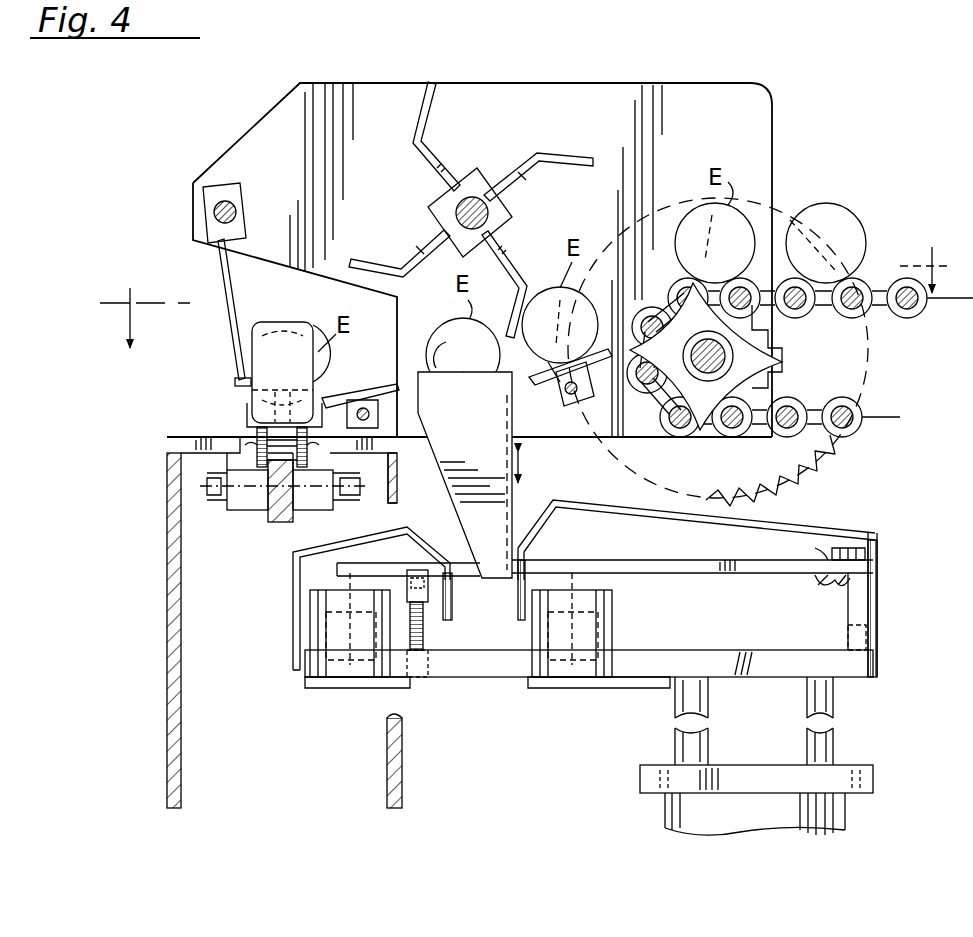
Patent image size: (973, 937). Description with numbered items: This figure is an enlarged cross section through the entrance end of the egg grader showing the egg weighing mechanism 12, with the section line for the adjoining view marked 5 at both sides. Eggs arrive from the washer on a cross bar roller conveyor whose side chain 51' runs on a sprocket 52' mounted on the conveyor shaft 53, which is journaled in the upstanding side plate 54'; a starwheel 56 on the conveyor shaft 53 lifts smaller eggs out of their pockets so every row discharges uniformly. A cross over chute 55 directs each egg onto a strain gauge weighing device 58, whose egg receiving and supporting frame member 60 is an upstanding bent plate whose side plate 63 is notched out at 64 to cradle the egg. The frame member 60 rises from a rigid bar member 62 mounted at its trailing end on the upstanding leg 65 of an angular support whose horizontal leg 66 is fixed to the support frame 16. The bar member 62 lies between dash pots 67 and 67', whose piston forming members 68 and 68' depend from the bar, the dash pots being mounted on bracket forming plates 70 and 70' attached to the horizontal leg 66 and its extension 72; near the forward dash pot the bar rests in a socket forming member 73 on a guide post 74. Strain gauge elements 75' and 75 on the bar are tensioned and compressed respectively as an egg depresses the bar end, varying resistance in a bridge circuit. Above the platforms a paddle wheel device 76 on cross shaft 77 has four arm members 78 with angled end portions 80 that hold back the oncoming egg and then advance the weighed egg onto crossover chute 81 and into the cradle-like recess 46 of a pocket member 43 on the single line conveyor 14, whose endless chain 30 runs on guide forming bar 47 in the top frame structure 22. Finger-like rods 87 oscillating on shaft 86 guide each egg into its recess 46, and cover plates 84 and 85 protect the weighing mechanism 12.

The side plate 54' is at (469, 244).
The section line 5- 5 is at (525, 283).
The shaft 86 is at (215, 204).
The finger-like rods 87 is at (228, 283).
The cradle-like recess 46 is at (234, 380).
The egg supporting pocket member 43 is at (298, 330).
The single line conveyor 14 is at (238, 413).
The endless chain 30 is at (252, 440).
The guide forming bar 47 is at (270, 515).
The top frame structure 22 is at (165, 622).
The conveyor support frame 16 is at (160, 788).
The crossover chute 81 is at (378, 384).
The cross over ramp or chute 55 is at (556, 388).
The paddle wheel device 76 is at (481, 210).
The cross shaft 77 is at (490, 218).
The arm members 78 is at (481, 210).
The angled end portion 80 is at (580, 158).
The sprocket 52' is at (800, 344).
The side chain 51' is at (876, 271).
The starwheel 56 is at (788, 357).
The conveyor shaft 53 is at (648, 432).
The cover plate 84 is at (800, 530).
The egg receiving and supporting frame member 60 is at (459, 452).
The side plate 63 is at (490, 466).
The notch 64 is at (435, 352).
The weighing mechanism 12 is at (573, 632).
The extension 72 is at (456, 660).
The cover plate 85 is at (292, 606).
The strain gauge weighing device 58 is at (603, 566).
The upstanding leg 65 is at (866, 610).
The bar member 62 is at (670, 574).
The strain gauge element 75' is at (812, 543).
The strain gauge element 75 is at (824, 594).
The horizontal leg 66 is at (740, 654).
The socket forming member 73 is at (432, 592).
The guide post 74 is at (426, 628).
The dash pot 67' is at (323, 649).
The piston forming member 68' is at (354, 649).
The bracket forming plate 70' is at (366, 706).
The dash pot 67 is at (599, 649).
The piston forming member 68 is at (599, 643).
The bracket forming plate 70 is at (559, 706).